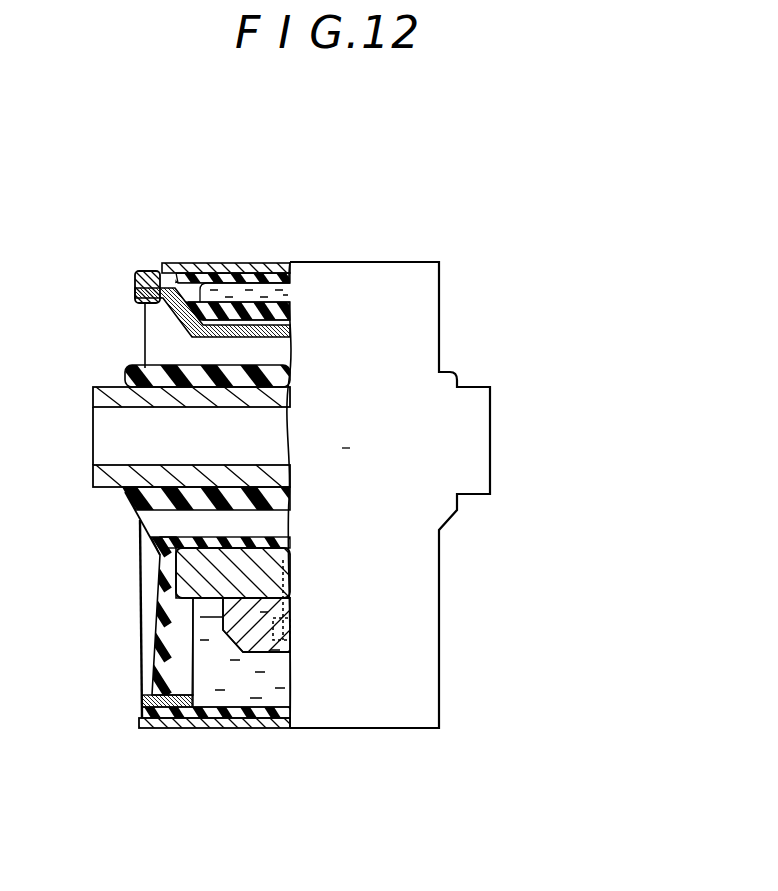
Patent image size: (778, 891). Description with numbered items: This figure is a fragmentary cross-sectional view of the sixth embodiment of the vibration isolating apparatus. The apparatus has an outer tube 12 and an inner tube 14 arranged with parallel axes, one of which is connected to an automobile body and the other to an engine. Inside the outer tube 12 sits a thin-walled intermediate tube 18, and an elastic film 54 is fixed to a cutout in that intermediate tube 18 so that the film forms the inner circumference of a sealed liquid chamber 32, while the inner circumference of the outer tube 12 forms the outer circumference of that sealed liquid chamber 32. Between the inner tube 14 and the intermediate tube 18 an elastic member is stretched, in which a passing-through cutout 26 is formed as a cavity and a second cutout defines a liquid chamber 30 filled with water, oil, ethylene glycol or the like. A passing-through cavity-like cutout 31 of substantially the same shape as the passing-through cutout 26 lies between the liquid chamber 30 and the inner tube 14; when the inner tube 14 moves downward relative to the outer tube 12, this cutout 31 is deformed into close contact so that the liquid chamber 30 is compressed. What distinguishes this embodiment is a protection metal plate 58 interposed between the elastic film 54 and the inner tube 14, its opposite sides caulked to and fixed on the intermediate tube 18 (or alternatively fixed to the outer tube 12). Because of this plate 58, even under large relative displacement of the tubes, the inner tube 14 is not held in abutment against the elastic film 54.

The outer tube 12 is at (232, 732).
The inner tube 14 is at (118, 383).
The intermediate tube 18 is at (140, 292).
The passing-through cutout 26 is at (287, 352).
The liquid chamber 30 is at (288, 672).
The passing-through cavity-like cutout 31 is at (138, 522).
The sealed liquid chamber 32 is at (270, 290).
The elastic film 54 is at (290, 305).
The protection metal plate 58 is at (192, 325).